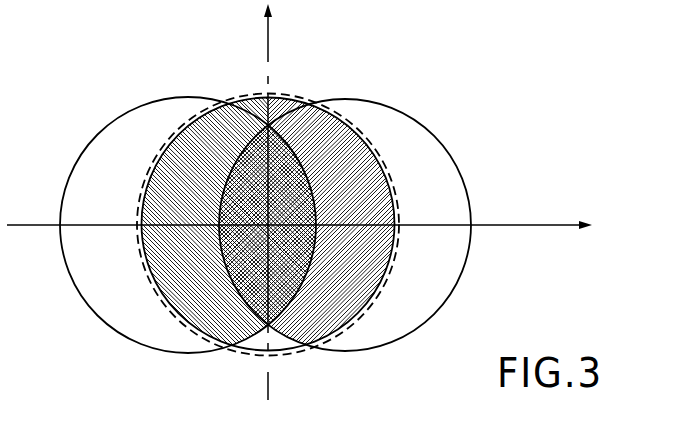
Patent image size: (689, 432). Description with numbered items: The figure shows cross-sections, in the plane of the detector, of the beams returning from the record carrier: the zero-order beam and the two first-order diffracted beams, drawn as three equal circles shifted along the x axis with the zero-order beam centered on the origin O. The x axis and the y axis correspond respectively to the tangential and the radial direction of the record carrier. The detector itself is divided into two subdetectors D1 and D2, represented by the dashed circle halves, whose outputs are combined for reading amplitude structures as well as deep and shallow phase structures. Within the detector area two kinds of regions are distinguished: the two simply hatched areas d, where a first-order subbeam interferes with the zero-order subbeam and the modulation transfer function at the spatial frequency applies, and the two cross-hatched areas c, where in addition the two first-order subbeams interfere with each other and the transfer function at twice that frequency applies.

The cross-hatched area c is at (268, 225).
The simply hatched area d is at (268, 221).
The x axis x is at (302, 214).
The y axis y is at (274, 202).
The origin O is at (266, 228).
The subdetector D1 is at (320, 314).
The subdetector D2 is at (229, 314).